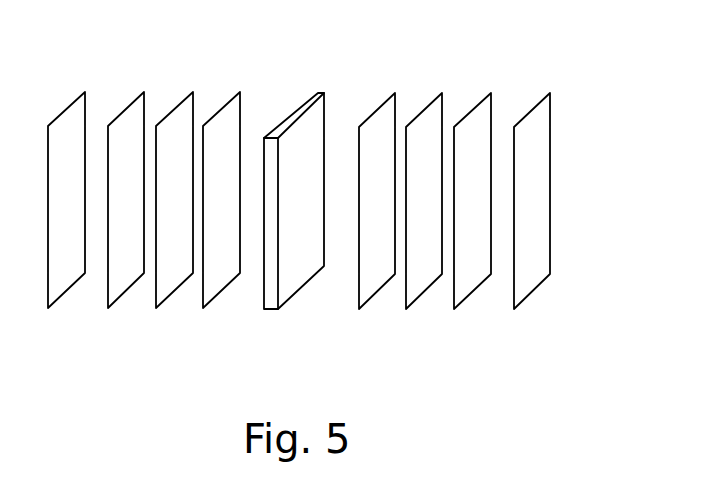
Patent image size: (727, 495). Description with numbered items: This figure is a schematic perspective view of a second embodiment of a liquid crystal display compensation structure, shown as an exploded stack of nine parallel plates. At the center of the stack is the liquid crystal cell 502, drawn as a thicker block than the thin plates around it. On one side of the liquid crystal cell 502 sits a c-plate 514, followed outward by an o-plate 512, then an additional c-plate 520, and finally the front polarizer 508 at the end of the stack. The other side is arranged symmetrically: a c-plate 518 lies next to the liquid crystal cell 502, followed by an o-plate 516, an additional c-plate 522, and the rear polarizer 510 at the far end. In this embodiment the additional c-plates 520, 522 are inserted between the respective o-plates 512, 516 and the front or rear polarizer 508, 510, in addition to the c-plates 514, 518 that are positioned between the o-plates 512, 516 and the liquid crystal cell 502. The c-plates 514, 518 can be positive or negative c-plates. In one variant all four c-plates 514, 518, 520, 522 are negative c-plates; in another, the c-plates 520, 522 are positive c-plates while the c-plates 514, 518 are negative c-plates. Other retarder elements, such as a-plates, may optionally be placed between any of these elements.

The liquid crystal cell 502 is at (306, 110).
The front polarizer 508 is at (87, 91).
The rear polarizer 510 is at (550, 128).
The o-plate 512 is at (193, 91).
The c-plate 514 is at (240, 91).
The o-plate 516 is at (442, 93).
The c-plate 518 is at (370, 116).
The additional c-plate 520 is at (108, 308).
The additional c-plate 522 is at (491, 93).